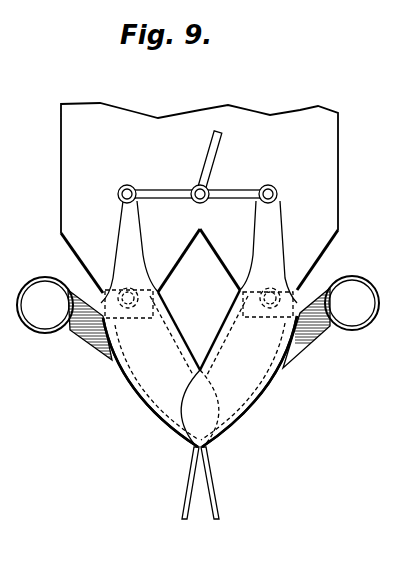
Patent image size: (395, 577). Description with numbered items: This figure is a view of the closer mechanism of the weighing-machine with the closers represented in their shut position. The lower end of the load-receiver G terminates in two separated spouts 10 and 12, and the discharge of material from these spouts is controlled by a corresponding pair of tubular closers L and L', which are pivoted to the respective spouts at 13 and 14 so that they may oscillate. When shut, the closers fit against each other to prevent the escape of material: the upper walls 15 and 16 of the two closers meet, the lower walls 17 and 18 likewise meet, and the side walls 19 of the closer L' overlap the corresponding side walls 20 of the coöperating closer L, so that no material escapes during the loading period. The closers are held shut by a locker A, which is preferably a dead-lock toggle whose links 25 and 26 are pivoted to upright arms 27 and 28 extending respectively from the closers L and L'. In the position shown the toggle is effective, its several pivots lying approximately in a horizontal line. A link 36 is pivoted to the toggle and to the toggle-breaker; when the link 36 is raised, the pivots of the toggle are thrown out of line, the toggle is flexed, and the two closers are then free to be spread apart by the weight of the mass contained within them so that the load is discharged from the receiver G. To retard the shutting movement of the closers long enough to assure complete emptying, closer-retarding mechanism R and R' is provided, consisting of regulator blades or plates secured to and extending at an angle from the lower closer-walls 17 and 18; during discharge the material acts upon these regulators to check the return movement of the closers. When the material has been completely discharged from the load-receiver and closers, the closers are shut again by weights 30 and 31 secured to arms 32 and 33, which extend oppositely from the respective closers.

The load-receiver G is at (338, 152).
The locker A is at (197, 184).
The link 25 is at (178, 200).
The link 26 is at (243, 200).
The upright arm 27 is at (120, 230).
The upright arm 28 is at (275, 240).
The link 36 is at (219, 153).
The spout 10 is at (168, 272).
The spout 12 is at (233, 272).
The pivot 13 is at (128, 305).
The pivot 14 is at (270, 305).
The weight 30 is at (45, 305).
The weight 31 is at (352, 303).
The arm 32 is at (90, 330).
The arm 33 is at (310, 322).
The upper wall 15 is at (177, 345).
The upper wall 16 is at (220, 345).
The tubular closer L is at (150, 382).
The tubular closer L' is at (249, 381).
The lower wall 17 is at (167, 423).
The lower wall 18 is at (230, 427).
The side wall 19 is at (198, 417).
The side wall 20 is at (167, 388).
The closer-retarding mechanism R is at (180, 483).
The closer-retarding mechanism R' is at (219, 483).